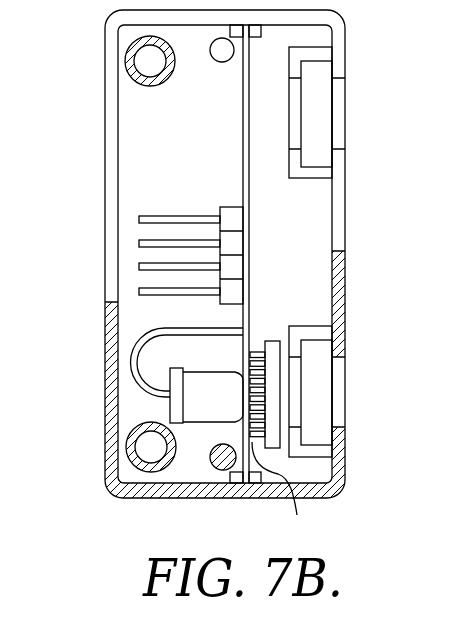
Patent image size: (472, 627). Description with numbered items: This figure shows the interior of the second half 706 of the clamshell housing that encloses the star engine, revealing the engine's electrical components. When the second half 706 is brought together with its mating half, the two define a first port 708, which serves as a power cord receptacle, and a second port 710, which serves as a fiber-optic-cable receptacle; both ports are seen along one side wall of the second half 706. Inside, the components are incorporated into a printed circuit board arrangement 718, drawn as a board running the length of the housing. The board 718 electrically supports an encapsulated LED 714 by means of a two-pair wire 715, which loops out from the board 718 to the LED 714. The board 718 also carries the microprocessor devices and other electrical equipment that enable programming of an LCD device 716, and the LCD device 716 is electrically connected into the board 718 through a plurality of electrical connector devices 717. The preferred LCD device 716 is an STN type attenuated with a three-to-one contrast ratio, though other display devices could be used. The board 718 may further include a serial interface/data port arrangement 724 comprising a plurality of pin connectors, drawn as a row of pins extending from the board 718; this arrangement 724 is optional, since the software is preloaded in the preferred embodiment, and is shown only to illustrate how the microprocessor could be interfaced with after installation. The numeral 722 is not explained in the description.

The second half 706 is at (350, 471).
The first port 708 is at (322, 130).
The second port 710 is at (315, 367).
The encapsulated LED 714 is at (230, 407).
The two-pair wire 715 is at (148, 341).
The LCD device 716 is at (271, 342).
The electrical connector devices 717 is at (282, 492).
The printed circuit board arrangement 718 is at (243, 115).
The pins 722 is at (157, 213).
The serial interface/data port arrangement 724 is at (141, 313).